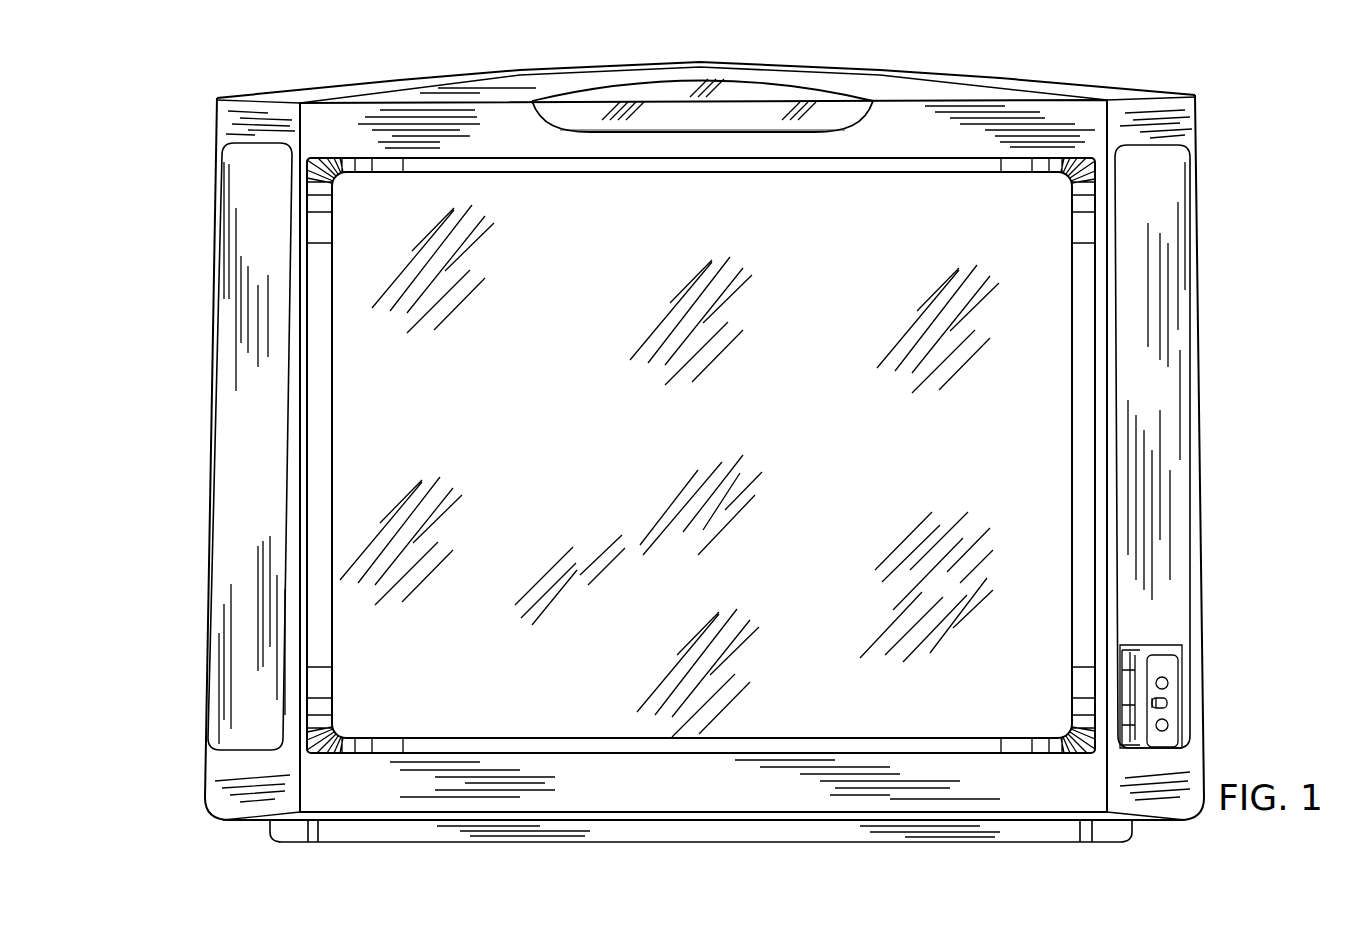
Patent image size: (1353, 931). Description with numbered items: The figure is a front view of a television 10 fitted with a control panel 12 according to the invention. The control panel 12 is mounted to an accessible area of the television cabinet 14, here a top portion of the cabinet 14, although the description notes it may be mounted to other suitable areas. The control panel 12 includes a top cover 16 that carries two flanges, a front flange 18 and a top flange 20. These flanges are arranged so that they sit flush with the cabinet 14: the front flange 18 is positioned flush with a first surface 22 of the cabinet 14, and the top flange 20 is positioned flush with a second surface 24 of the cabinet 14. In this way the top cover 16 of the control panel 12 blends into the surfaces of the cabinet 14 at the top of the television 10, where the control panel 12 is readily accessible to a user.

The television 10 is at (905, 790).
The control panel 12 is at (832, 83).
The television cabinet 14 is at (1110, 100).
The top cover 16 is at (593, 92).
The front flange 18 is at (765, 122).
The top flange 20 is at (628, 88).
The first surface 22 is at (955, 143).
The second surface 24 is at (938, 90).